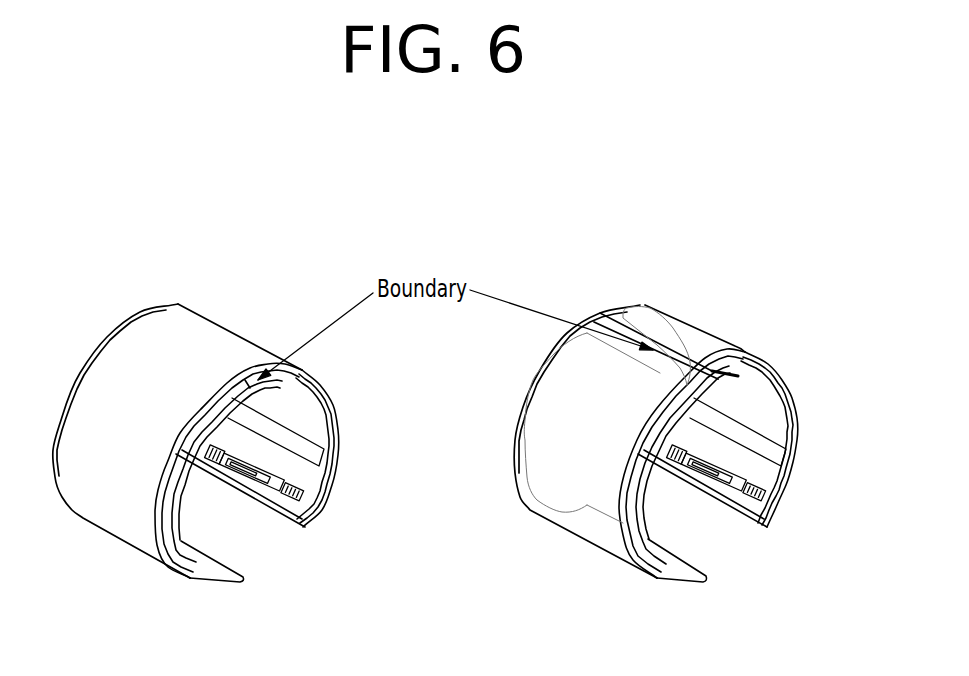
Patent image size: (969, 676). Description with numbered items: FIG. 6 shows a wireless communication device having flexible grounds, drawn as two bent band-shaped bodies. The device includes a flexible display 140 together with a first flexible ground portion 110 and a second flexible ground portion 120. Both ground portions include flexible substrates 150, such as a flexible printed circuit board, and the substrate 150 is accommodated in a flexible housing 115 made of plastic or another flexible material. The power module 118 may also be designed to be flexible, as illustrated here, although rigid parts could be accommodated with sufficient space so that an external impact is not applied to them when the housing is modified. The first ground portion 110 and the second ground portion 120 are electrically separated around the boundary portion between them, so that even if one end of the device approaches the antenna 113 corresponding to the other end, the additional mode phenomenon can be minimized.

The flexible display 140 is at (183, 320).
The first flexible ground portion 110 is at (778, 376).
The antenna 113 is at (707, 497).
The flexible housing 115 is at (663, 578).
The power module 118 is at (768, 420).
The second flexible ground portion 120 is at (548, 431).
The flexible substrate 150 is at (633, 378).